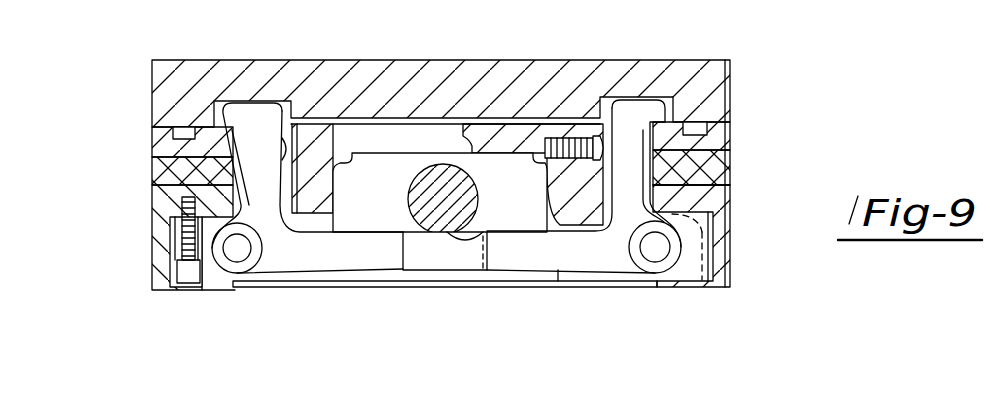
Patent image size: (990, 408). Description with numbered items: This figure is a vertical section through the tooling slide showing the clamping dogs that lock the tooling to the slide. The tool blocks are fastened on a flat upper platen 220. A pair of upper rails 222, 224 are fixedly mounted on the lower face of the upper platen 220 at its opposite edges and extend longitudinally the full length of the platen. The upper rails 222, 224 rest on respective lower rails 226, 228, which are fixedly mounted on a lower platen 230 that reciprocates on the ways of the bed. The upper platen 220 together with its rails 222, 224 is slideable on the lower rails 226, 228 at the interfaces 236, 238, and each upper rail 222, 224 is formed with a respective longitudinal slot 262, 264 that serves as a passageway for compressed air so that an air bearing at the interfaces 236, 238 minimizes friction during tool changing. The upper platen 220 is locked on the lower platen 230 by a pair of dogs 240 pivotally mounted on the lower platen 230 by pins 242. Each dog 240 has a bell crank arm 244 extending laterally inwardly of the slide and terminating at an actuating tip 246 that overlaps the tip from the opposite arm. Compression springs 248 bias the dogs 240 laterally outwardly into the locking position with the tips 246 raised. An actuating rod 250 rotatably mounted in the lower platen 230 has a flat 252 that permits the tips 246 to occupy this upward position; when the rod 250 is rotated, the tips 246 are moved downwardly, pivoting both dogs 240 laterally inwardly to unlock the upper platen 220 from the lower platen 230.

The upper platen 220 is at (735, 90).
The upper rail 222 is at (725, 141).
The upper rail 224 is at (152, 139).
The lower rail 226 is at (733, 173).
The lower rail 228 is at (160, 188).
The lower platen 230 is at (733, 232).
The interface 236 is at (697, 184).
The interface 238 is at (165, 185).
The dog 240 is at (245, 114).
The pin 242 is at (240, 256).
The bell crank arm 244 is at (515, 262).
The actuating tip 246 is at (413, 268).
The compression spring 248 is at (557, 138).
The actuating rod 250 is at (412, 200).
The flat 252 is at (489, 236).
The longitudinal slot 262 is at (703, 122).
The longitudinal slot 264 is at (180, 130).